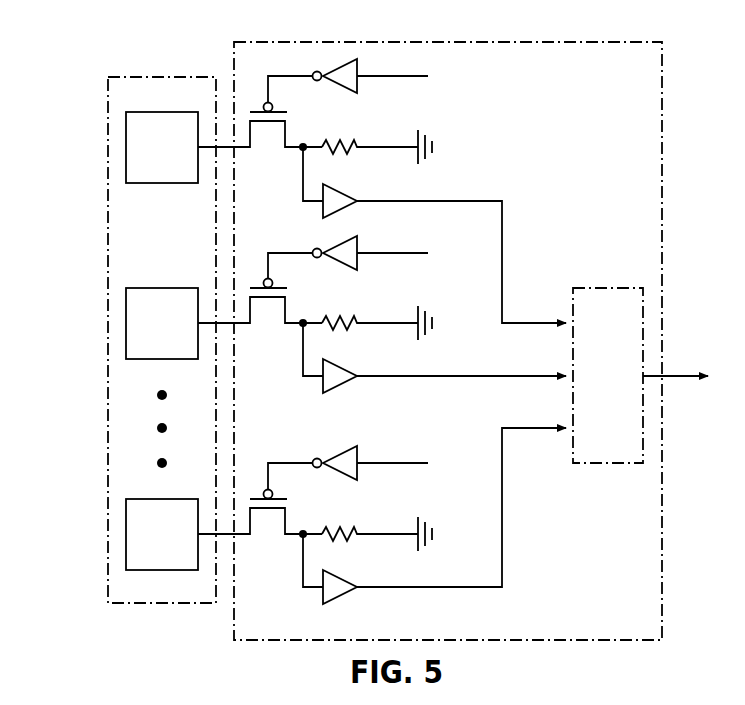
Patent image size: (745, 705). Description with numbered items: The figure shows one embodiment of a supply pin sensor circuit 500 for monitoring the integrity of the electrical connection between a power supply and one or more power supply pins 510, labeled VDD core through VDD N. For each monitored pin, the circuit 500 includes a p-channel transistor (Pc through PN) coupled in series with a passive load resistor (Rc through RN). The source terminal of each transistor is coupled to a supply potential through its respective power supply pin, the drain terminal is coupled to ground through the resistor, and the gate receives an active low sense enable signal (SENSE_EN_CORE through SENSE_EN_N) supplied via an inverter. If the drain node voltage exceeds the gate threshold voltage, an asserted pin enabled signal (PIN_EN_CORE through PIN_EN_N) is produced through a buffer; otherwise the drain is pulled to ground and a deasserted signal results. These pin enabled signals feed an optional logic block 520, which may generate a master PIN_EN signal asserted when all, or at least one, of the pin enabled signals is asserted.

The supply pin sensor circuit 500 is at (643, 631).
The power supply pins 510 is at (160, 68).
The optional logic block 520 is at (606, 280).